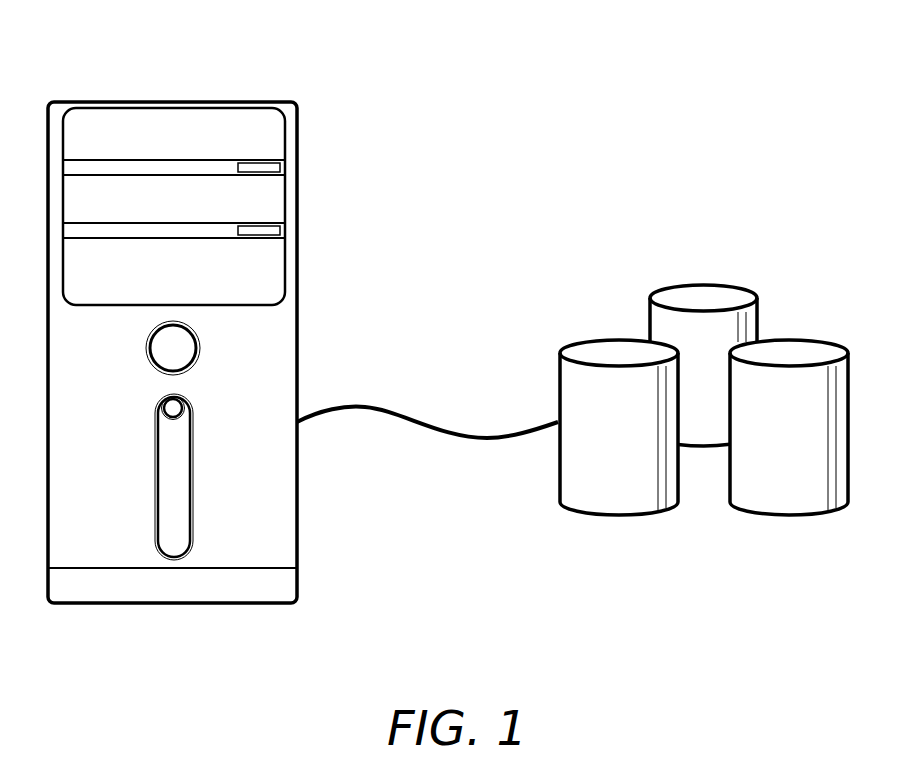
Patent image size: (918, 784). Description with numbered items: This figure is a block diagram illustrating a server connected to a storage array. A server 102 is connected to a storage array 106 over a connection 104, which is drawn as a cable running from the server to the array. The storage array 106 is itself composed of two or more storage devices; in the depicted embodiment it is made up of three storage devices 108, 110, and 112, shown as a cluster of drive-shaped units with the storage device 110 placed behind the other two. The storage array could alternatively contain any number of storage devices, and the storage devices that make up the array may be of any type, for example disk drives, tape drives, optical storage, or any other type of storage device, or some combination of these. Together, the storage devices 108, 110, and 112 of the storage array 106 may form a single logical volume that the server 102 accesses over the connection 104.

The server 102 is at (210, 101).
The connection 104 is at (470, 441).
The storage array 106 is at (680, 404).
The storage device 108 is at (597, 341).
The storage device 110 is at (712, 285).
The storage device 112 is at (830, 340).